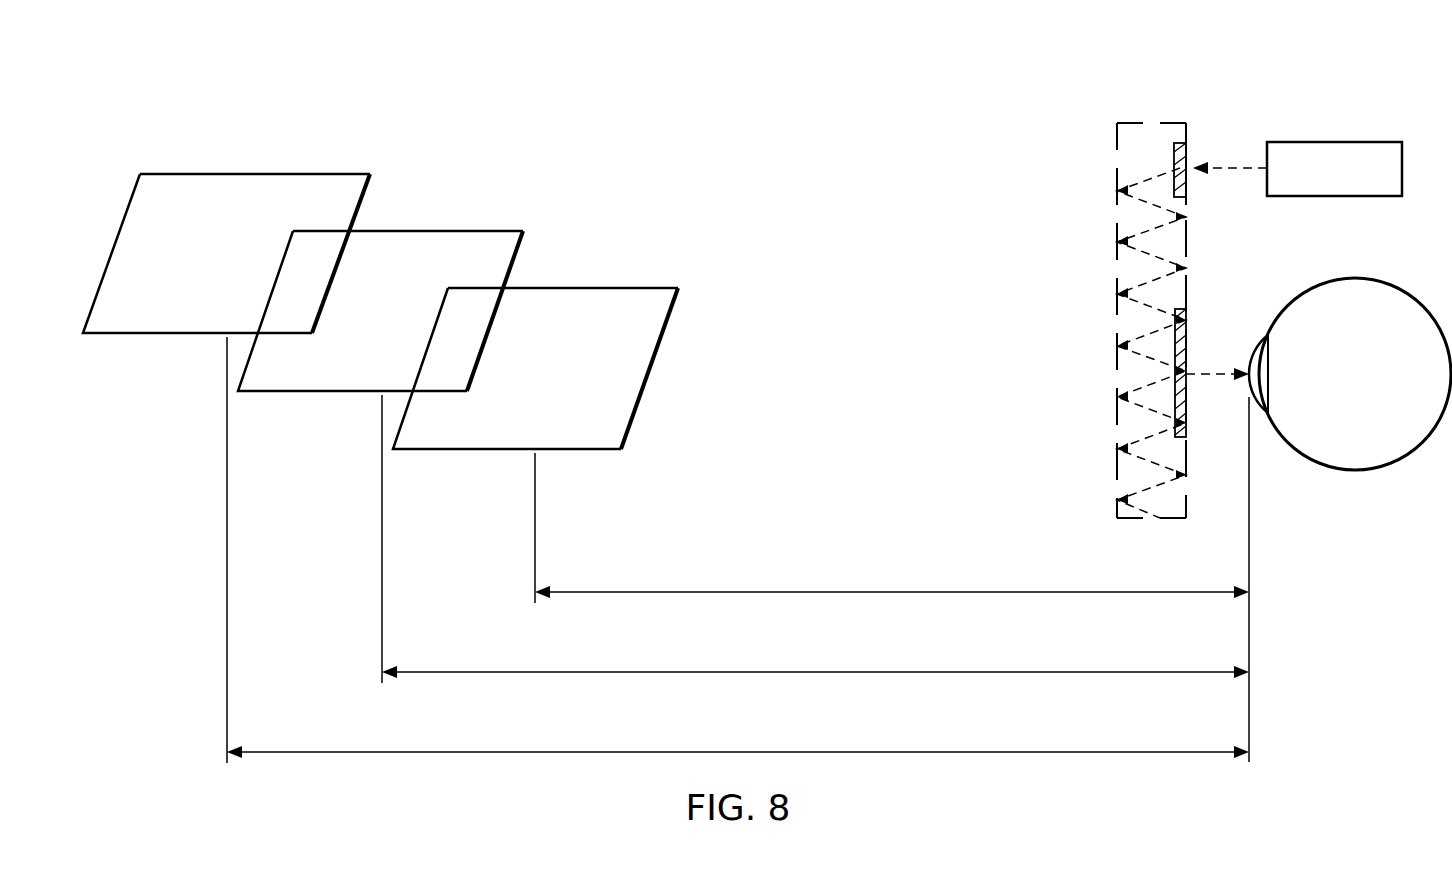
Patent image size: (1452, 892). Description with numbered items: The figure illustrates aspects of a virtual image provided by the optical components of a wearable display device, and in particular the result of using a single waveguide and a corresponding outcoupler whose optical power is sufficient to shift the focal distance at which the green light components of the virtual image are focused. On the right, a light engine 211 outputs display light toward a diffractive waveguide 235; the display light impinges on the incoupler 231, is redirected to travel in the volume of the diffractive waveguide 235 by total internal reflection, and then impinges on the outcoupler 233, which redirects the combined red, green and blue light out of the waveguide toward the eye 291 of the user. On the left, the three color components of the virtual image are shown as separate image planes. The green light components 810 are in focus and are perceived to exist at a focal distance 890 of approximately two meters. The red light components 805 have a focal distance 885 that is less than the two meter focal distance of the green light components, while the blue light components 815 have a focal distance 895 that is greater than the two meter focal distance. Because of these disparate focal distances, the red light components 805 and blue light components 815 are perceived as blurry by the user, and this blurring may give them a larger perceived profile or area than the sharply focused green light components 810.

The red light components 805 is at (587, 286).
The green light components 810 is at (432, 228).
The blue light components 815 is at (253, 172).
The light engine 211 is at (1335, 142).
The incoupler 231 is at (1174, 165).
The outcoupler 233 is at (1175, 400).
The diffractive waveguide 235 is at (1178, 114).
The eye 291 is at (1352, 471).
The focal distance 885 is at (1093, 593).
The focal distance 890 is at (1017, 673).
The focal distance 895 is at (943, 753).